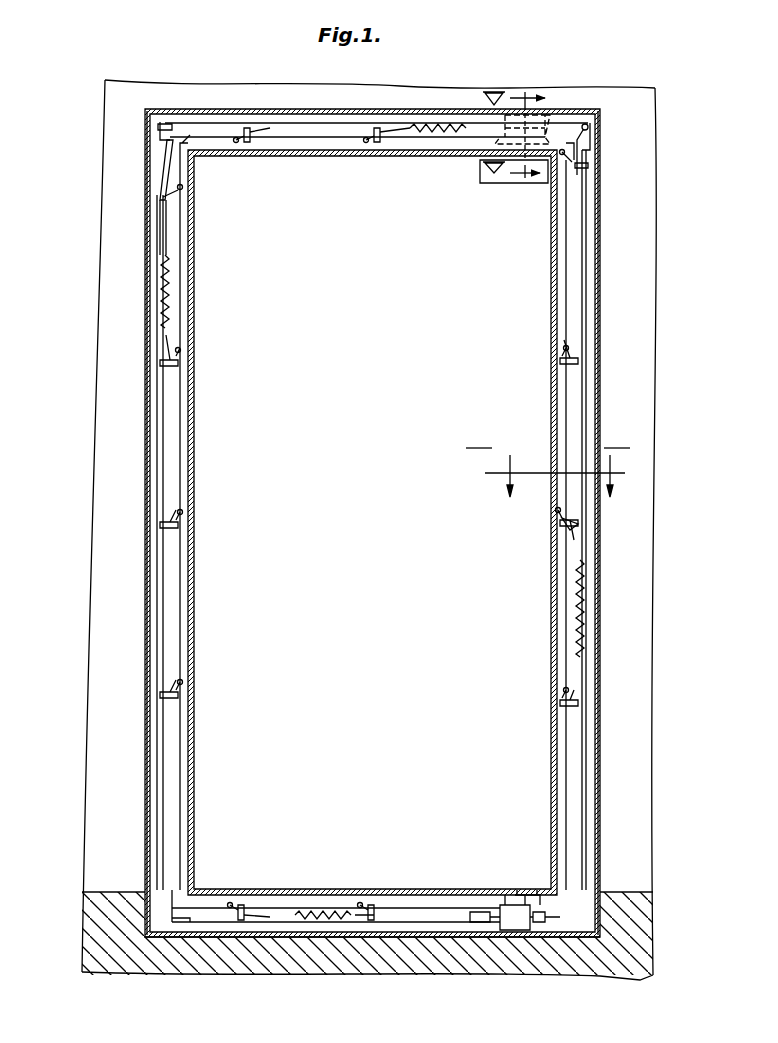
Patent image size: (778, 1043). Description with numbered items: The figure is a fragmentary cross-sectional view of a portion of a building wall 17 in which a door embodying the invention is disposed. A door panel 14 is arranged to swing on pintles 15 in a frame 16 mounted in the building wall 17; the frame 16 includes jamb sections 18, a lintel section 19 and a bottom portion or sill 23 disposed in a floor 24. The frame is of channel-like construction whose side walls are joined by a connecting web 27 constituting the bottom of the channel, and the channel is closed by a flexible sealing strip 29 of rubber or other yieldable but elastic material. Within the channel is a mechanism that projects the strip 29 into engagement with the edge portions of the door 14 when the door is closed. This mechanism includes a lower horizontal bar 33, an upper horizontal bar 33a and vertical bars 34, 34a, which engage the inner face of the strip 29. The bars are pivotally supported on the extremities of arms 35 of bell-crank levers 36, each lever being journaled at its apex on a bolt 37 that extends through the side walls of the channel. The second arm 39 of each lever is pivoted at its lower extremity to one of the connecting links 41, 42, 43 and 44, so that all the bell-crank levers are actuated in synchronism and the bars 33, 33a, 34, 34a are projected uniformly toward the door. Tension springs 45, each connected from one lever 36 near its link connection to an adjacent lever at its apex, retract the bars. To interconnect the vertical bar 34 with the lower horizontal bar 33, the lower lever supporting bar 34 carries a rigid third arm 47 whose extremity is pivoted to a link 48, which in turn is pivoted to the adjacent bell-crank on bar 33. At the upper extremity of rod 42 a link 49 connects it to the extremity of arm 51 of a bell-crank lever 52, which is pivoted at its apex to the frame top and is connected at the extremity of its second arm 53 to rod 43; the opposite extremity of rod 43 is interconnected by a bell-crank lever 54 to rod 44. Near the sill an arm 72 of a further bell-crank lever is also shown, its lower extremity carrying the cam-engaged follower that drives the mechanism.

The door panel 14 is at (370, 582).
The pintle 15 is at (560, 160).
The frame 16 is at (603, 565).
The building wall 17 is at (655, 473).
The jamb section 18 is at (147, 395).
The lintel section 19 is at (328, 110).
The sill 23 is at (390, 930).
The floor 24 is at (635, 905).
The connecting web 27 is at (160, 420).
The flexible sealing strip 29 is at (192, 410).
The lower horizontal bar 33 is at (270, 892).
The upper horizontal bar 33a is at (395, 145).
The vertical bar 34 is at (183, 445).
The vertical bar 34a is at (563, 382).
The arm 35 is at (170, 522).
The bell-crank lever 36 is at (175, 535).
The bolt 37 is at (176, 528).
The second arm 39 is at (585, 527).
The connecting link 41 is at (440, 918).
The connecting link 42 is at (165, 597).
The connecting link 43 is at (335, 140).
The connecting link 44 is at (588, 296).
The tension spring 45 is at (585, 605).
The third arm 47 is at (145, 935).
The link 48 is at (192, 920).
The link 49 is at (163, 178).
The arm 51 is at (163, 153).
The bell-crank lever 52 is at (147, 128).
The second arm 53 is at (170, 128).
The bell-crank lever 54 is at (590, 128).
The arm 72 is at (575, 912).